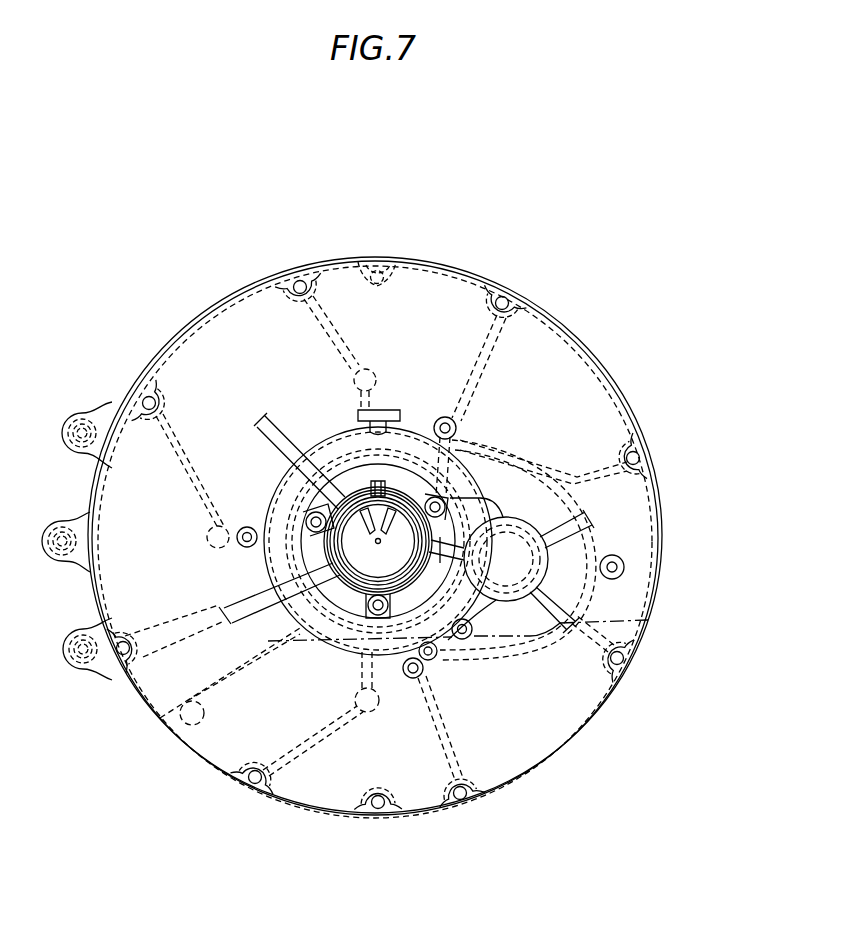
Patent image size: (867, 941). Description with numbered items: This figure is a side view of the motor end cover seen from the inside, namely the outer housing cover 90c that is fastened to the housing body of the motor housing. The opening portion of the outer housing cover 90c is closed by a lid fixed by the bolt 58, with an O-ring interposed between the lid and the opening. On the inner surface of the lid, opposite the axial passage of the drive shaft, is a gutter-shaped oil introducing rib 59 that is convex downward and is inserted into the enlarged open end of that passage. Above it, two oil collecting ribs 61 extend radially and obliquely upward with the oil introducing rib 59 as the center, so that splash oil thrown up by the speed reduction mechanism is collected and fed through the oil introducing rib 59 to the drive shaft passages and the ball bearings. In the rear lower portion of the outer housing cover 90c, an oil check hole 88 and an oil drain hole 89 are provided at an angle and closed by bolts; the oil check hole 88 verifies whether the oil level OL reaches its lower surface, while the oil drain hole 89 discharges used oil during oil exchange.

The bolt 58 is at (313, 521).
The oil introducing rib 59 is at (378, 544).
The oil collecting ribs 61 is at (367, 511).
The oil check hole 88 is at (466, 631).
The oil drain hole 89 is at (433, 655).
The outer housing cover 90c is at (556, 326).
The oil level OL is at (645, 621).